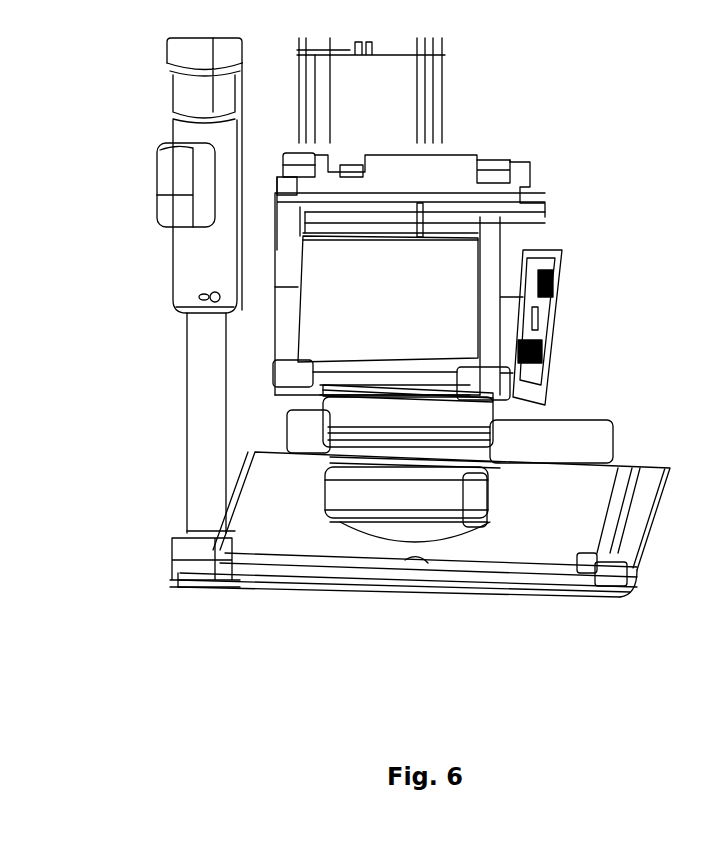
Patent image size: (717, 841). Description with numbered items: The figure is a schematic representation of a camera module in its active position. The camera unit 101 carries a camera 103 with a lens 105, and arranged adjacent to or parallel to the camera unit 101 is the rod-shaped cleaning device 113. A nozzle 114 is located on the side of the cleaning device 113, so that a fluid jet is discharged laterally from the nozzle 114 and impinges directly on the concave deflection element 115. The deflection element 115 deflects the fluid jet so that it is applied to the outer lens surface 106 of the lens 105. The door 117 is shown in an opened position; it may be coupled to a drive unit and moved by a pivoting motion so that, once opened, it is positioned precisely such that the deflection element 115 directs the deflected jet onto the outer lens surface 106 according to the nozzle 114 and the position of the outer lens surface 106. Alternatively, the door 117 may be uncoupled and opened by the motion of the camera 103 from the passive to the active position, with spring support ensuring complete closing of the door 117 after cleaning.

The camera unit 101 is at (450, 263).
The camera 103 is at (403, 112).
The lens 105 is at (427, 528).
The outer lens surface 106 is at (358, 533).
The cleaning device 113 is at (213, 415).
The nozzle 114 is at (187, 531).
The deflection element 115 is at (415, 567).
The door 117 is at (275, 540).